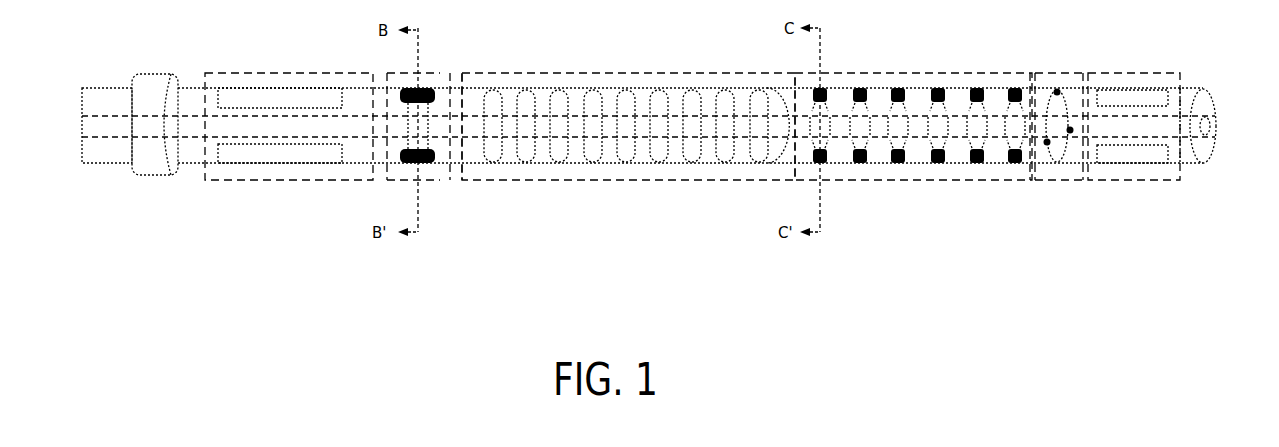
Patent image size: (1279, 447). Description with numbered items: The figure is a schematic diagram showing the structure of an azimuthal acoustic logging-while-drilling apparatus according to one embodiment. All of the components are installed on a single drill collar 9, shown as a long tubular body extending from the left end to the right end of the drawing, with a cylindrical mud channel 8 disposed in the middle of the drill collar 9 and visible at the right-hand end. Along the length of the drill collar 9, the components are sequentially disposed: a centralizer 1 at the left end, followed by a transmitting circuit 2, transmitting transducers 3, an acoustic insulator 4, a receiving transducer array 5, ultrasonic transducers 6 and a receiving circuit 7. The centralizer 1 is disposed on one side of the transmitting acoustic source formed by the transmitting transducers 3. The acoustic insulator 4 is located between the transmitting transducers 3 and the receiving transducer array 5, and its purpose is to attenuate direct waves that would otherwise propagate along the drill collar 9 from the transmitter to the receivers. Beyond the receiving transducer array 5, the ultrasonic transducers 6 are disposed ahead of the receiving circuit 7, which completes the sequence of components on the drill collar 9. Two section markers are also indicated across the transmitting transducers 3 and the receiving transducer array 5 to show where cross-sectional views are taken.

The centralizer 1 is at (155, 176).
The transmitting circuit 2 is at (290, 181).
The transmitting transducers 3 is at (432, 183).
The acoustic insulator 4 is at (608, 181).
The receiving transducer array 5 is at (910, 181).
The ultrasonic transducers 6 is at (1057, 181).
The receiving circuit 7 is at (1133, 181).
The mud channel 8 is at (1212, 112).
The drill collar 9 is at (1210, 152).